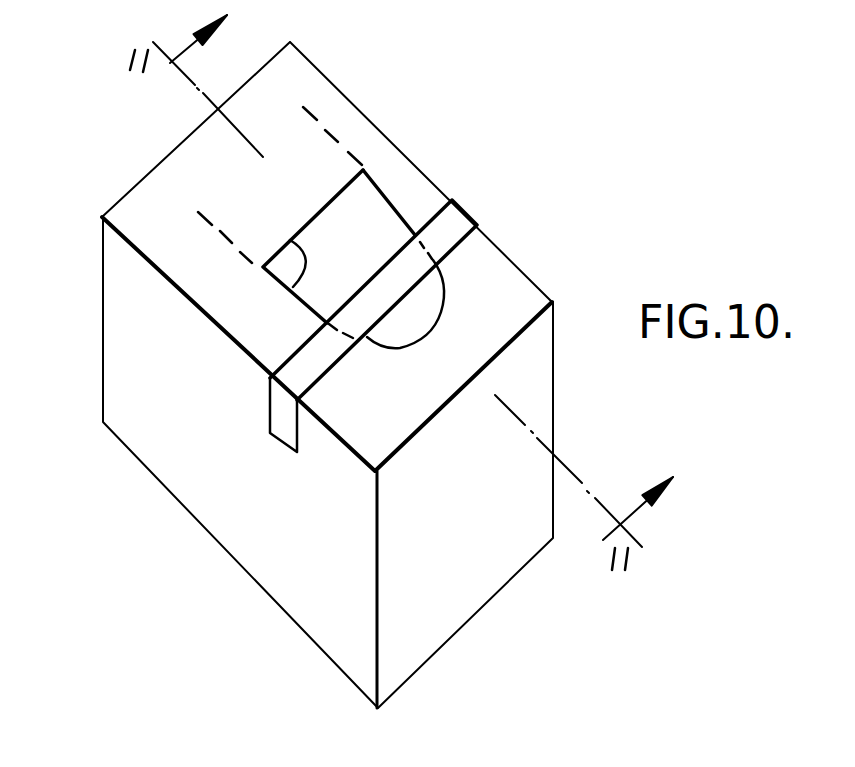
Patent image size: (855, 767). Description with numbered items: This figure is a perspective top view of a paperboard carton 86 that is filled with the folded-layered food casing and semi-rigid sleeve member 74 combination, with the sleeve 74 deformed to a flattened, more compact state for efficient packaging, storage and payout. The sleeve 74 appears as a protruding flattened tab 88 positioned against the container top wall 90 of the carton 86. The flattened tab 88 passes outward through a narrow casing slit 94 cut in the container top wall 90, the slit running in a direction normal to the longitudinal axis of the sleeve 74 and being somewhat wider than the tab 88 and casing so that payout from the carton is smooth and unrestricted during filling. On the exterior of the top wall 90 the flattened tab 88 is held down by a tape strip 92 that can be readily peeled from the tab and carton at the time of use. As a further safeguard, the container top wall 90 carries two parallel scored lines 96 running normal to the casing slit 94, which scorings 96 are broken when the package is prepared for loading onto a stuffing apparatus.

The semi-rigid sleeve member 74 is at (368, 202).
The carton 86 is at (523, 237).
The flattened tab 88 is at (380, 343).
The container top wall 90 is at (140, 182).
The tape strip 92 is at (297, 355).
The casing slit 94 is at (293, 287).
The scored lines 96 is at (327, 138).